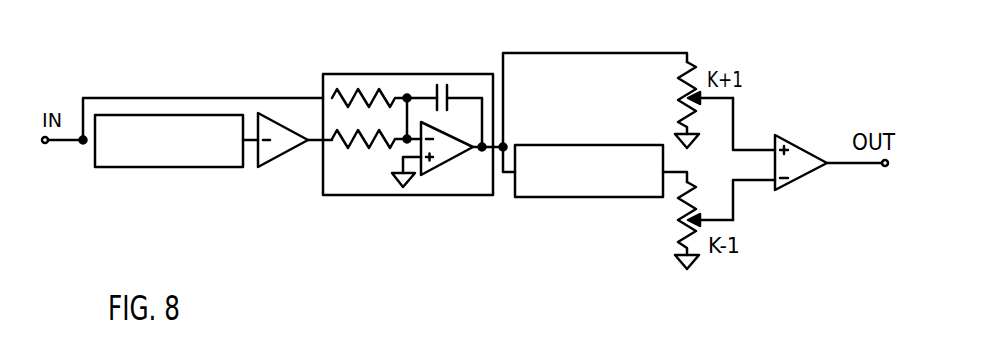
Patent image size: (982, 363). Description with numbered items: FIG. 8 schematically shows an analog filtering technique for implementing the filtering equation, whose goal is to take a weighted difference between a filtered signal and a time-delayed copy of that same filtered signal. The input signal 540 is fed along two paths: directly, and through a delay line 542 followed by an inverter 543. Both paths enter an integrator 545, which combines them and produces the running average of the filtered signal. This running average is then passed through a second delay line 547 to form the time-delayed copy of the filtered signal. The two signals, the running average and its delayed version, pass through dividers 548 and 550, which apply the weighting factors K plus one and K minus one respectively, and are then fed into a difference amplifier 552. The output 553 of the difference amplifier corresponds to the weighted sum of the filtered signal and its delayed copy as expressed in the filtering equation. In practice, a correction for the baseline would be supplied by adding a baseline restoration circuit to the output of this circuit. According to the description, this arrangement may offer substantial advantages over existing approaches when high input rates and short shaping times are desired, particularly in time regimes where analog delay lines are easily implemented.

The input signal 540 is at (47, 144).
The delay line 542 is at (202, 167).
The inverter 543 is at (278, 162).
The integrator 545 is at (423, 195).
The delay line 547 is at (562, 197).
The divider 548 is at (678, 104).
The divider 550 is at (681, 232).
The difference amplifier 552 is at (801, 146).
The output 553 is at (866, 165).